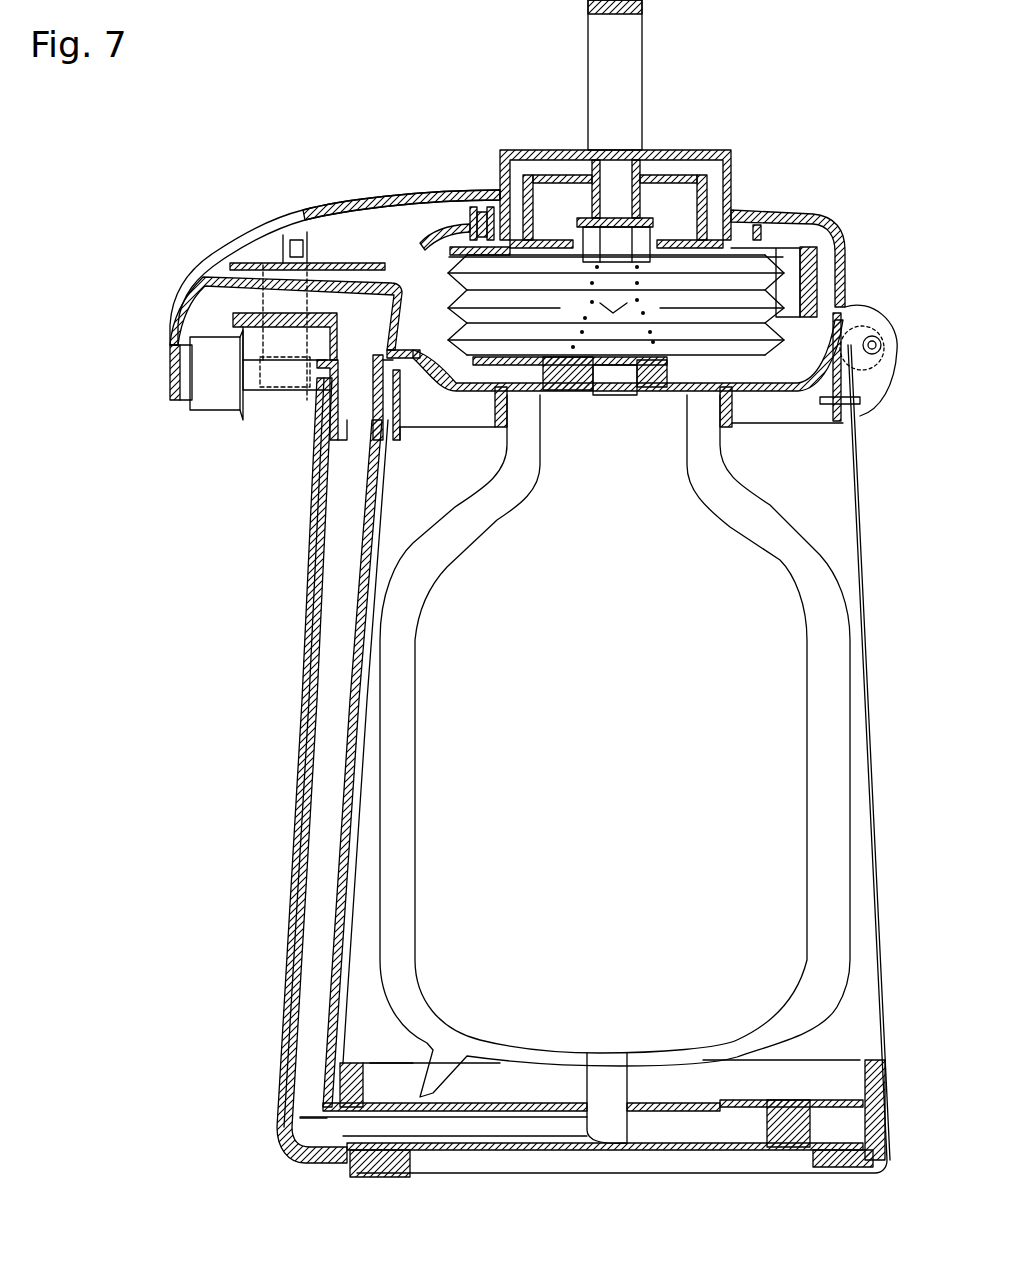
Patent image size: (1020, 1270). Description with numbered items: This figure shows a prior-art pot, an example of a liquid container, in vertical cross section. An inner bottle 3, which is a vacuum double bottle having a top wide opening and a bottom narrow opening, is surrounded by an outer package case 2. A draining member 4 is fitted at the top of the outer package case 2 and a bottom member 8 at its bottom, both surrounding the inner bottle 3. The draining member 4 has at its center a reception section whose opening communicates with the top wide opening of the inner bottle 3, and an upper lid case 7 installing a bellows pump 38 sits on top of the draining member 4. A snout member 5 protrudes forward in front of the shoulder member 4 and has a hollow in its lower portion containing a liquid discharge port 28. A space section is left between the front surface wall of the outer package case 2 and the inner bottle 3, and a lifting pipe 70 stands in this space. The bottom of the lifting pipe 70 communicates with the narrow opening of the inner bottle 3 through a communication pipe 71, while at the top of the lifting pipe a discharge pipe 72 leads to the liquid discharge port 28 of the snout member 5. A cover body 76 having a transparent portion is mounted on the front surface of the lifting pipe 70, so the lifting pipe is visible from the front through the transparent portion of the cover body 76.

The outer package case 2 is at (862, 616).
The inner bottle 3 is at (843, 695).
The draining member 4 is at (787, 392).
The snout member 5 is at (166, 390).
The upper lid case 7 is at (425, 180).
The bottom member 8 is at (380, 1185).
The liquid discharge port 28 is at (187, 408).
The bellows pump 38 is at (707, 320).
The lifting pipe 70 is at (313, 790).
The communication pipe 71 is at (478, 1127).
The discharge pipe 72 is at (187, 293).
The cover body 76 is at (285, 1050).